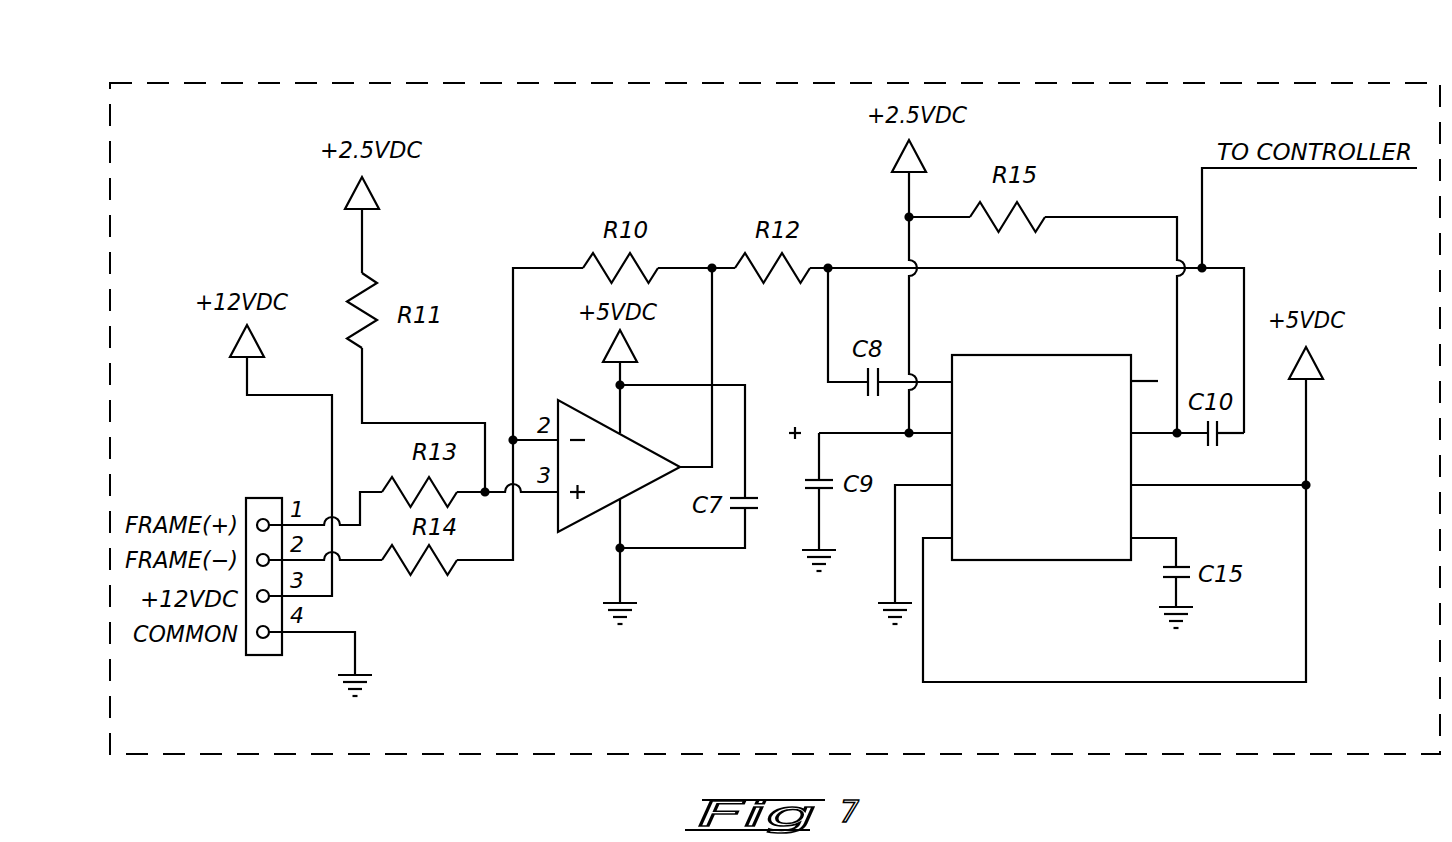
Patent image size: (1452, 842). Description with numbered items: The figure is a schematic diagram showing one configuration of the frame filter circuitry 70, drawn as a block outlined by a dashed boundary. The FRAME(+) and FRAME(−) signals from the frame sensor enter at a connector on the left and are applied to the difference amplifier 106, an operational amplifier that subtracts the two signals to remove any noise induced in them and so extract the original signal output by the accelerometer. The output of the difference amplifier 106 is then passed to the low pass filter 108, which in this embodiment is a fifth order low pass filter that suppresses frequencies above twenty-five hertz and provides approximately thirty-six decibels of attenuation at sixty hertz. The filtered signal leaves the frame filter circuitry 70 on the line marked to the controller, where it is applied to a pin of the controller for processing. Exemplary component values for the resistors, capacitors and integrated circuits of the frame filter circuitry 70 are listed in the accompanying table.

The frame filter circuitry 70 is at (1062, 82).
The difference amplifier 106 is at (590, 517).
The low pass filter 108 is at (1032, 560).